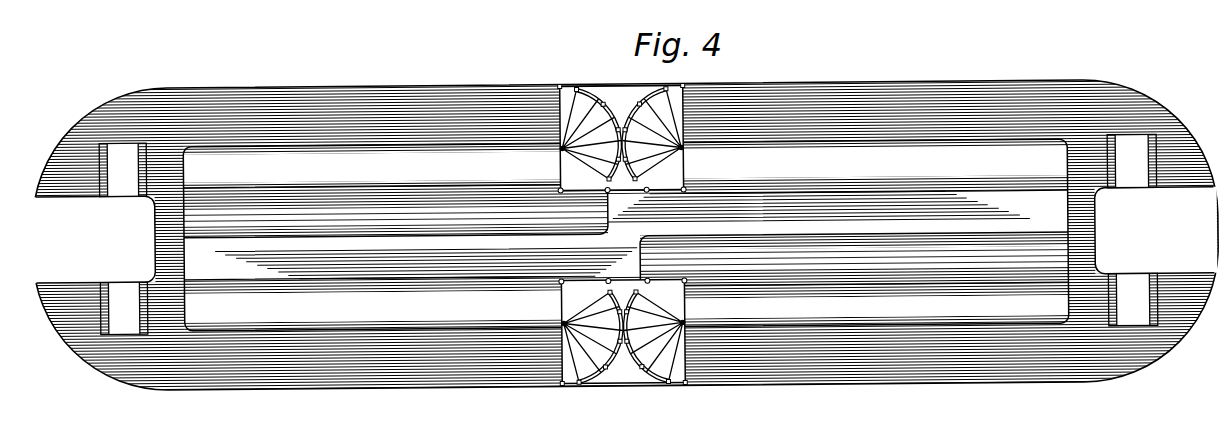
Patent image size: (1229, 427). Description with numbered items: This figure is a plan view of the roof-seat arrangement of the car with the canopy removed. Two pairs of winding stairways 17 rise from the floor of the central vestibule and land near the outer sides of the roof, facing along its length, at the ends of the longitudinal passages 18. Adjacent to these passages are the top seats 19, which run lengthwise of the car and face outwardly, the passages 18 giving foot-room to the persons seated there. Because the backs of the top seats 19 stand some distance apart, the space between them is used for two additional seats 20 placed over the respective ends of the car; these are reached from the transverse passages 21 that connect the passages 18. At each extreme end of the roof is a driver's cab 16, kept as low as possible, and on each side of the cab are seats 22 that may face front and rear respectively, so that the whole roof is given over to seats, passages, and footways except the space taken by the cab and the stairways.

The driver's cab 16 is at (624, 235).
The winding stairways 17 is at (638, 100).
The passages 18 is at (626, 235).
The top seats 19 is at (626, 235).
The additional seats 20 is at (626, 235).
The transverse passages 21 is at (627, 235).
The seats 22 is at (628, 234).